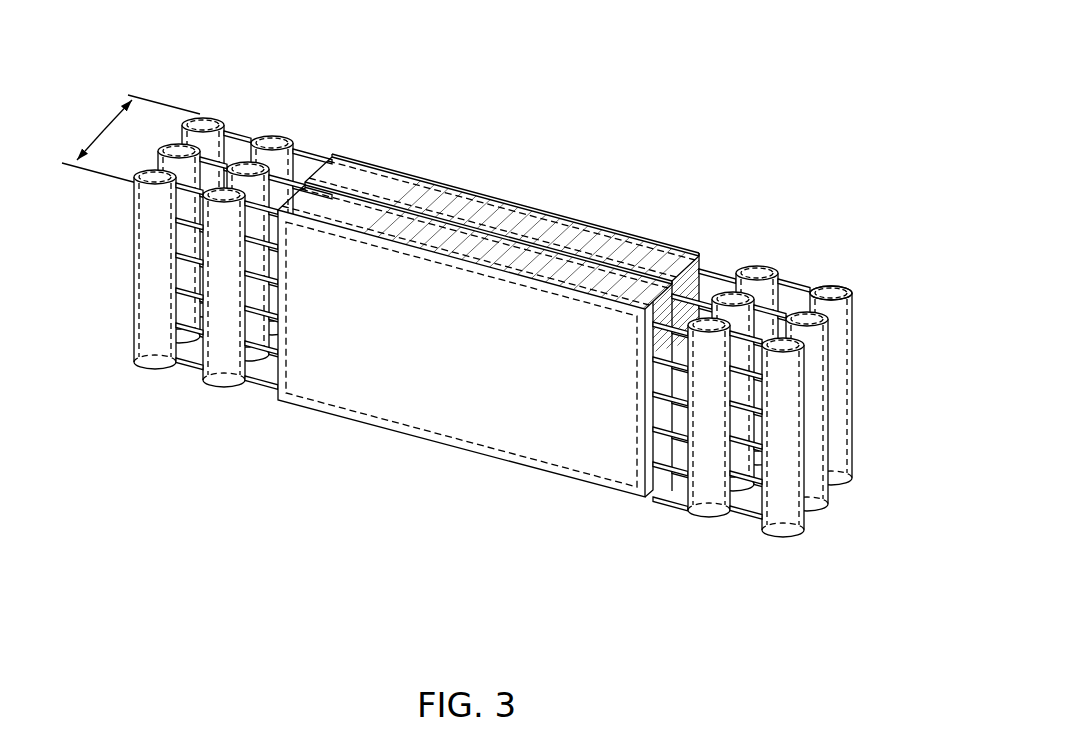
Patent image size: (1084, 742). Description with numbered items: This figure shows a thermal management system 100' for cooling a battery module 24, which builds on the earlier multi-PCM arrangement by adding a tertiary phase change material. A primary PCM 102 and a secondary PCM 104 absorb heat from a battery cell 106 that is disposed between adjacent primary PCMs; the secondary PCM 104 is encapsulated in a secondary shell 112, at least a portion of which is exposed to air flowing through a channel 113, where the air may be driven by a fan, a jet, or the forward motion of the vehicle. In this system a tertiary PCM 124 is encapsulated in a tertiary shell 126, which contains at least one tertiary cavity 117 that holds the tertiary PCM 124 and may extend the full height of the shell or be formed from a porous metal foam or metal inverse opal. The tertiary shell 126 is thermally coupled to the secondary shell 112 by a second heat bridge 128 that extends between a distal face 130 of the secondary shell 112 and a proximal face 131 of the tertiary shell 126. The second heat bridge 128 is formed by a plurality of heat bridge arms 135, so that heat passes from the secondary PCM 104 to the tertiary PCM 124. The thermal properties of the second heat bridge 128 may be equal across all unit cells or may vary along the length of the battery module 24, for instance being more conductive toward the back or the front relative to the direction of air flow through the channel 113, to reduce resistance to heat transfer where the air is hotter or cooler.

The battery module 24 is at (845, 163).
The thermal management system 100' is at (490, 329).
The primary PCM 102 is at (512, 211).
The secondary PCM 104 is at (274, 141).
The battery cell 106 is at (387, 191).
The secondary shell 112 is at (221, 386).
The channel 113 is at (162, 430).
The tertiary cavity 117 is at (207, 121).
The tertiary PCM 124 is at (839, 297).
The tertiary shell 126 is at (848, 336).
The second heat bridge 128 is at (737, 540).
The distal face 130 is at (740, 453).
The proximal face 131 is at (752, 465).
The heat bridge arms 135 is at (792, 289).